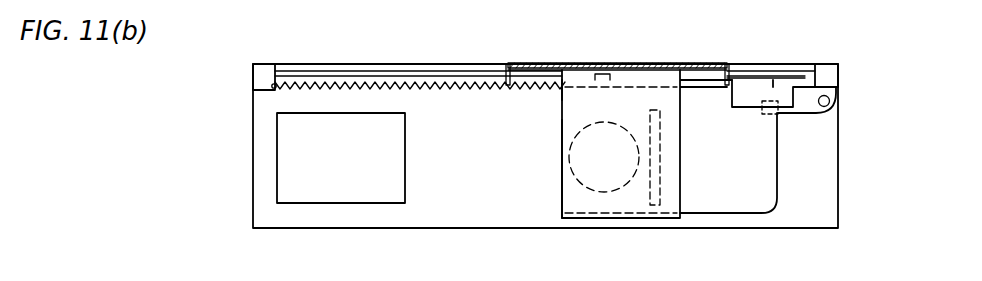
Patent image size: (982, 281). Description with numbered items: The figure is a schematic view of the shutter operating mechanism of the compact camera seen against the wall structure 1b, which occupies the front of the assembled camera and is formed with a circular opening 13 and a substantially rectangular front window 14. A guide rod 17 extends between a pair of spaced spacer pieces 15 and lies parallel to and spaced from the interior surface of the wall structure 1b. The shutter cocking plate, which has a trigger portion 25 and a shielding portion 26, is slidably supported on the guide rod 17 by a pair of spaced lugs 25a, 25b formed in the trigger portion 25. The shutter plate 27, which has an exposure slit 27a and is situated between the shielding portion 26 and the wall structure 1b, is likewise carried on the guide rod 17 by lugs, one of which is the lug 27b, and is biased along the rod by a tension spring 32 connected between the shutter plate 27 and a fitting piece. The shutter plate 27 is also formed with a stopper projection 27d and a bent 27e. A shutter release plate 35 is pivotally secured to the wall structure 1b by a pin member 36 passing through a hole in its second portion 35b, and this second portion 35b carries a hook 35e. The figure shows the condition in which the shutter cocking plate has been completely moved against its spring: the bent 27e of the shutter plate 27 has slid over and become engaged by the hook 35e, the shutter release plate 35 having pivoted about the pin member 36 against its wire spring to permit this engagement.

The wall structure 1b is at (254, 118).
The circular opening 13 is at (606, 193).
The front window 14 is at (342, 203).
The spacer piece 15 is at (265, 77).
The guide rod 17 is at (378, 76).
The trigger portion 25 is at (648, 64).
The lug 25a is at (727, 70).
The lug 25b is at (508, 70).
The shielding portion 26 is at (566, 183).
The shutter plate 27 is at (721, 218).
The exposure slit 27a is at (563, 80).
The lug 27b is at (734, 80).
The stopper projection 27d is at (603, 74).
The bent 27e is at (775, 101).
The tension spring 32 is at (330, 86).
The shutter release plate 35 is at (824, 112).
The second portion 35b is at (805, 79).
The hook 35e is at (766, 117).
The pin member 36 is at (829, 103).